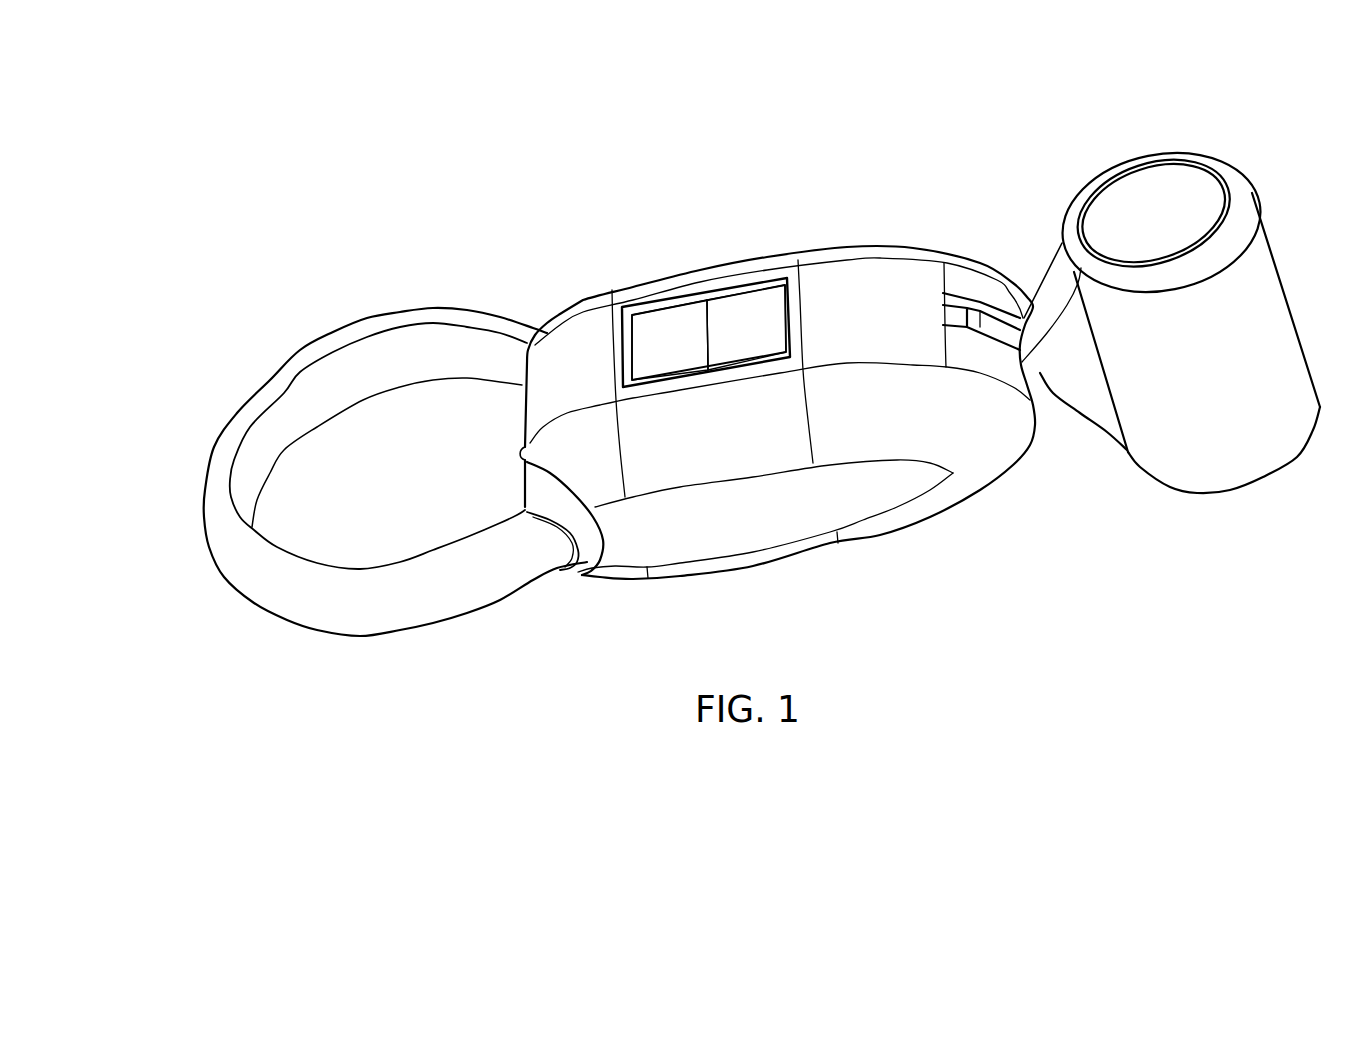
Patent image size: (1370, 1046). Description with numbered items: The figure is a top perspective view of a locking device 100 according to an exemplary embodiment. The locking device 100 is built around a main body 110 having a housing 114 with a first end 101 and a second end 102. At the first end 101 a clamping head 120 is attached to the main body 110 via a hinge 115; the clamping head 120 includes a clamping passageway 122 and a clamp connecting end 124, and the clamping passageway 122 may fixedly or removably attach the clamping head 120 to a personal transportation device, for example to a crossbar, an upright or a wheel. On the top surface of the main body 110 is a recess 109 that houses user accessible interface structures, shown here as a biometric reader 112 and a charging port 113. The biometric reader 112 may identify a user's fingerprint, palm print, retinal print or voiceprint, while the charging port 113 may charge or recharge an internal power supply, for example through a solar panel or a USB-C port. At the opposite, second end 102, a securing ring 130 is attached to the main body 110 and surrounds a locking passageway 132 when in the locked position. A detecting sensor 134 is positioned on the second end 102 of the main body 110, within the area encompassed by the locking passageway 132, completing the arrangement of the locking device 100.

The locking device 100 is at (476, 149).
The first end 101 is at (1015, 275).
The second end 102 is at (522, 385).
The recess 109 is at (700, 300).
The main body 110 is at (890, 533).
The biometric reader 112 is at (662, 325).
The charging port 113 is at (763, 310).
The housing 114 is at (663, 470).
The hinge 115 is at (975, 320).
The clamping head 120 is at (1290, 310).
The clamping passageway 122 is at (1197, 190).
The clamp connecting end 124 is at (1040, 373).
The securing ring 130 is at (209, 550).
The locking passageway 132 is at (380, 567).
The detecting sensor 134 is at (520, 455).